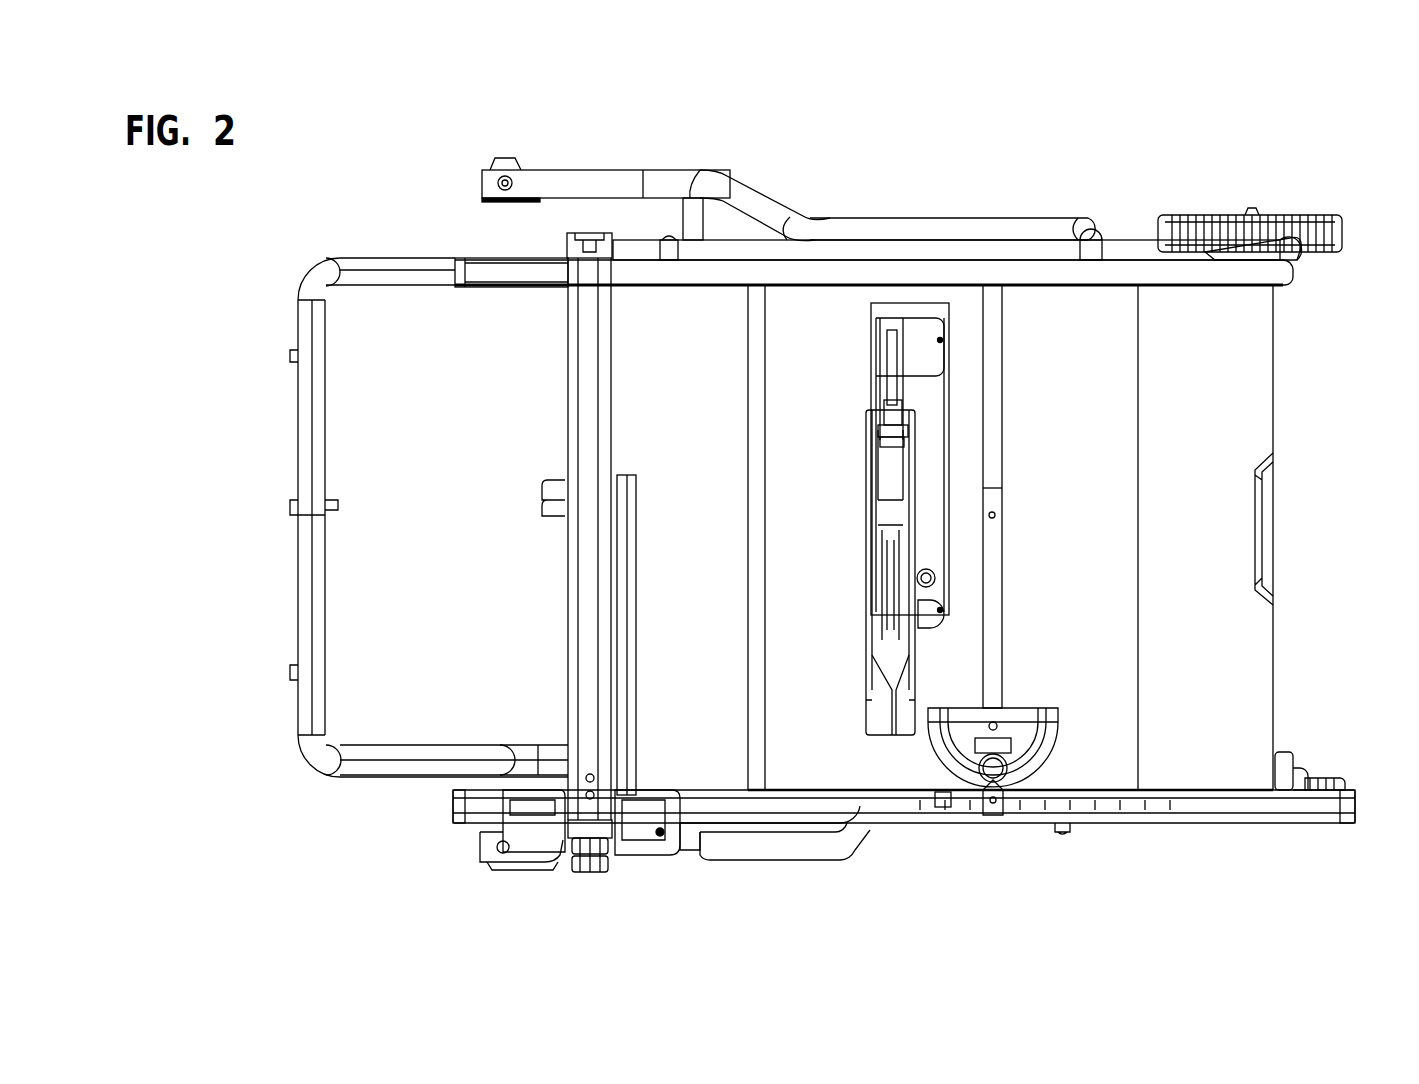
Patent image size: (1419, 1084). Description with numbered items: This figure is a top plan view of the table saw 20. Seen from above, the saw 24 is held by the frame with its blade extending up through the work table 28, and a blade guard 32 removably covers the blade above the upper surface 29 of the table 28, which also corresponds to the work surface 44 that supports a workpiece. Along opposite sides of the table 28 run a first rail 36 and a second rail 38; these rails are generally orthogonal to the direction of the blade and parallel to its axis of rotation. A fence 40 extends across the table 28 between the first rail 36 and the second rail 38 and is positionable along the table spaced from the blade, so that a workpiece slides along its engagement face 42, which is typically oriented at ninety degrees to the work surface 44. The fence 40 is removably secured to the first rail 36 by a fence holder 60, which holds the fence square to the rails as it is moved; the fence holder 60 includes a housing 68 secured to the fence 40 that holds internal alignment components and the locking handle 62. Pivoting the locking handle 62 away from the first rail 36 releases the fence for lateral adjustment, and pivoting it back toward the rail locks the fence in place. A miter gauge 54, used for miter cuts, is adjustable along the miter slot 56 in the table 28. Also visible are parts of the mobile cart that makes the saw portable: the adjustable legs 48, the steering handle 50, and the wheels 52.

The table saw 20 is at (1095, 151).
The saw 24 is at (852, 456).
The work table 28 is at (1258, 332).
The upper surface 29 is at (1255, 380).
The blade guard 32 is at (873, 680).
The first rail 36 is at (1193, 812).
The second rail 38 is at (1135, 268).
The fence 40 is at (583, 362).
The engagement face 42 is at (613, 332).
The work surface 44 is at (1218, 443).
The legs 48 is at (613, 186).
The steering handle 50 is at (302, 416).
The wheels 52 is at (1297, 230).
The miter gauge 54 is at (1032, 706).
The miter slot 56 is at (1002, 578).
The fence holder 60 is at (493, 870).
The locking handle 62 is at (596, 862).
The housing 68 is at (546, 850).